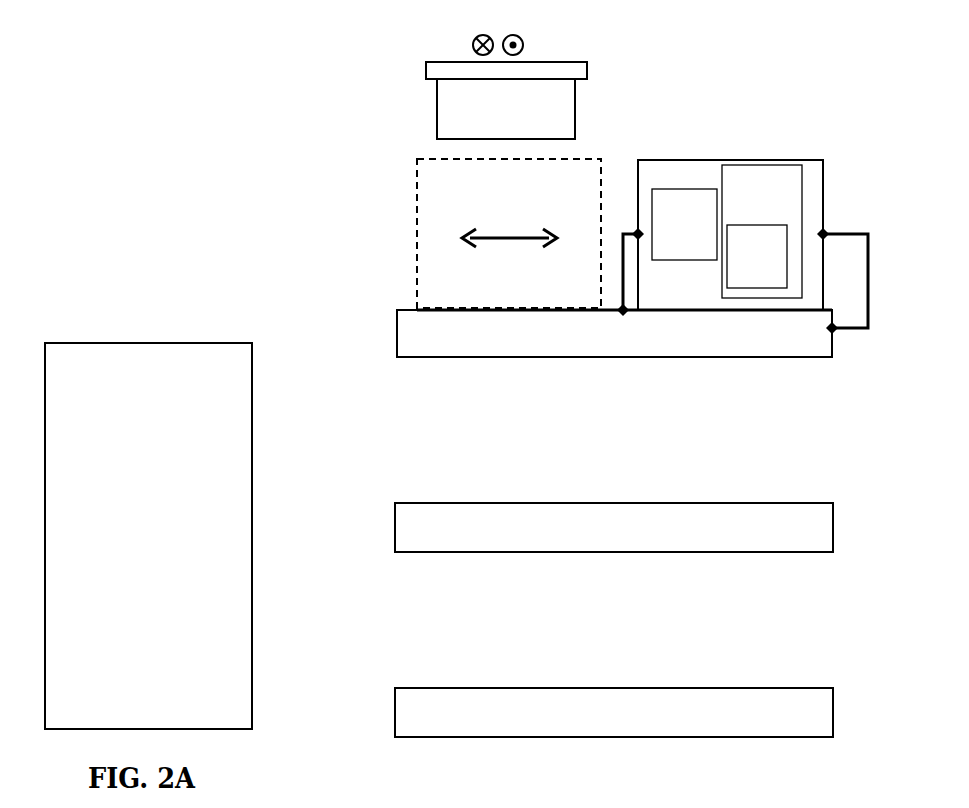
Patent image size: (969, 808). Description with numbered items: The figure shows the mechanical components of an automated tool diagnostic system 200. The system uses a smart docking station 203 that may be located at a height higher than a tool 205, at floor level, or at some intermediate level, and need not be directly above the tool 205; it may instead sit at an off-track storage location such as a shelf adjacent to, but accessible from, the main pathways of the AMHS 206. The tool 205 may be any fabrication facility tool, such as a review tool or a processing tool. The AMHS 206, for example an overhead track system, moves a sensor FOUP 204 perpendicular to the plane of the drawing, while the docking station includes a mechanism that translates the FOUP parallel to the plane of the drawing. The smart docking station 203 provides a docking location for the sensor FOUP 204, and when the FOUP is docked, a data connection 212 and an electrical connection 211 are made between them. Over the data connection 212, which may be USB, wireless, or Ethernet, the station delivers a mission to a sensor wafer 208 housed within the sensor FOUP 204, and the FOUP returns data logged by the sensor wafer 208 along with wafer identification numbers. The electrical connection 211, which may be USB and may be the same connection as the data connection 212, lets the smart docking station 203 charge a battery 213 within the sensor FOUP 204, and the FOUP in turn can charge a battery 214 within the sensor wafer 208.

The automated tool diagnostic system 200 is at (340, 65).
The smart docking station 203 is at (630, 336).
The sensor FOUP 204 is at (413, 200).
The tool 205 is at (137, 508).
The AMHS 206 is at (575, 103).
The sensor wafer 208 is at (768, 221).
The electrical connection 211 is at (849, 333).
The data connection 212 is at (635, 234).
The battery 213 is at (702, 248).
The battery 214 is at (770, 280).